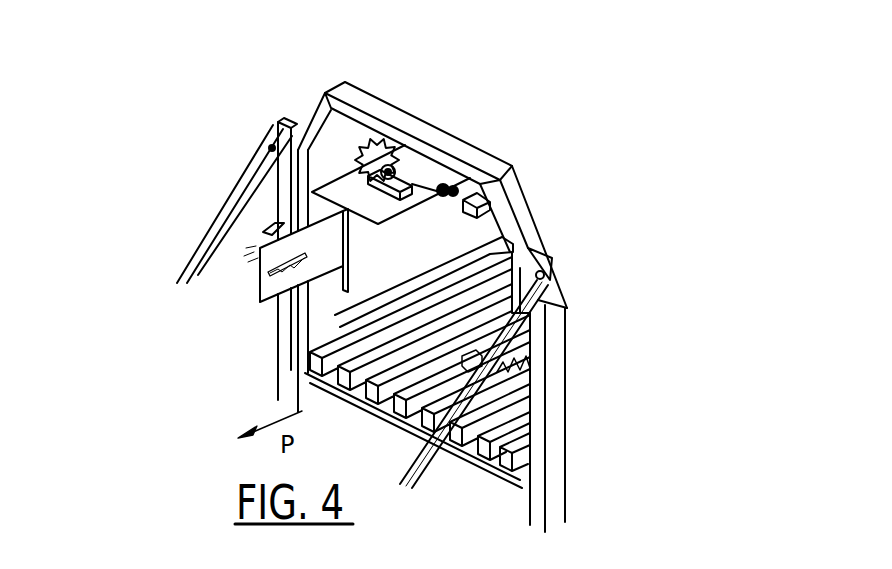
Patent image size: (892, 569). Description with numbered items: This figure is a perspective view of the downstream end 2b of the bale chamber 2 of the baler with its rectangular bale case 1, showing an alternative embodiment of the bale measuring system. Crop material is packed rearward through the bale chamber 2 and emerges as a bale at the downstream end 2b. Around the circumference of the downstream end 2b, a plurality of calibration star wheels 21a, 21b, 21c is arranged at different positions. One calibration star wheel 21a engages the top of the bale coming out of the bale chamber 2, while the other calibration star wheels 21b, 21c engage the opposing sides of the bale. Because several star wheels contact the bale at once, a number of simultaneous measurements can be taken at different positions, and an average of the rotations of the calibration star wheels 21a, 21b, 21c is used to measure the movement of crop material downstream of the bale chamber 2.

The bale case 1 is at (205, 125).
The bale chamber 2 is at (388, 292).
The downstream end of the bale chamber 2b is at (355, 150).
The calibration star wheel 21a is at (407, 142).
The calibration star wheel 21b is at (263, 238).
The calibration star wheel 21c is at (523, 343).